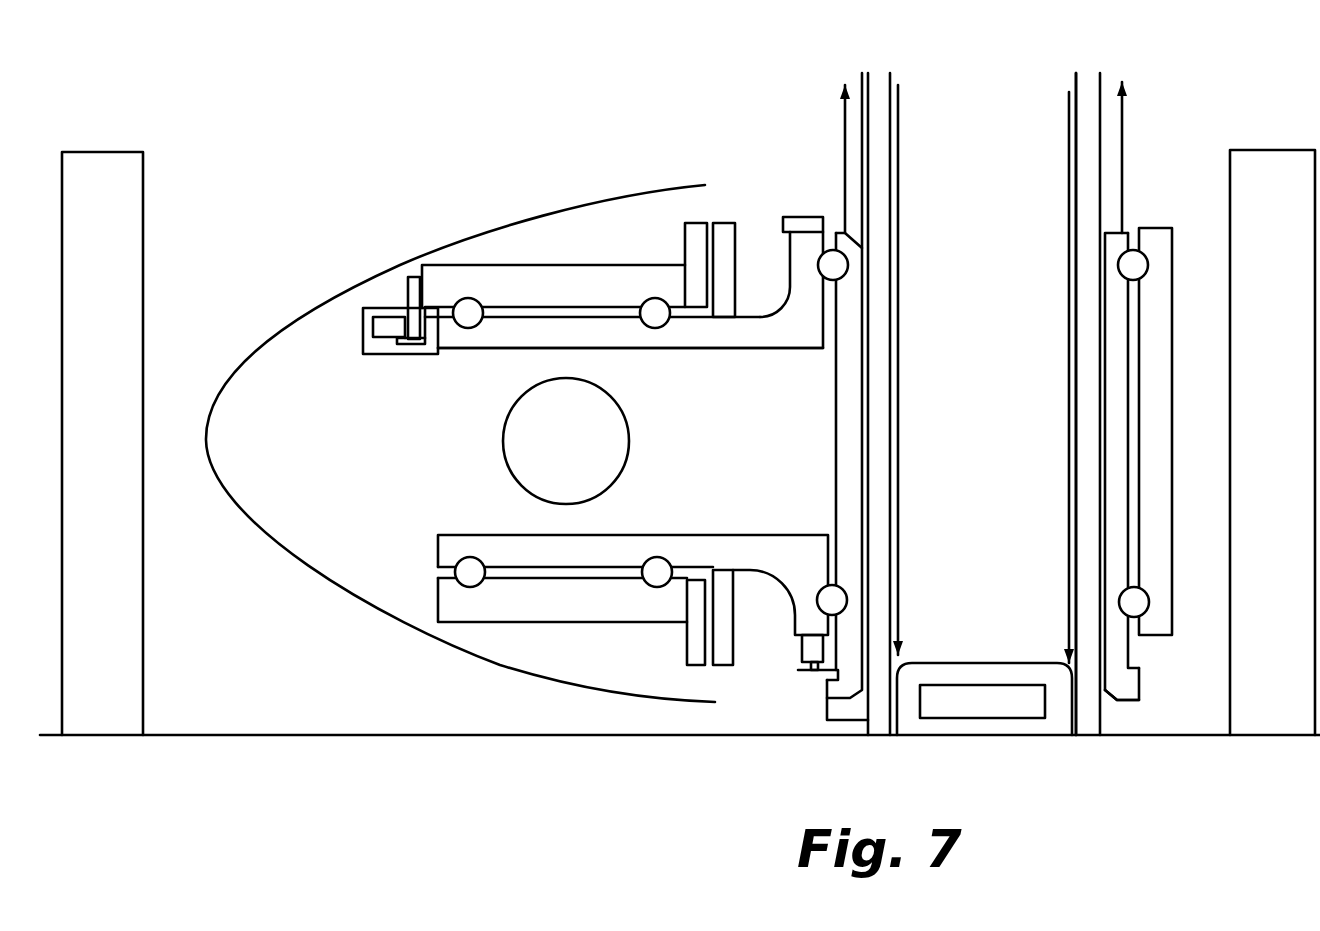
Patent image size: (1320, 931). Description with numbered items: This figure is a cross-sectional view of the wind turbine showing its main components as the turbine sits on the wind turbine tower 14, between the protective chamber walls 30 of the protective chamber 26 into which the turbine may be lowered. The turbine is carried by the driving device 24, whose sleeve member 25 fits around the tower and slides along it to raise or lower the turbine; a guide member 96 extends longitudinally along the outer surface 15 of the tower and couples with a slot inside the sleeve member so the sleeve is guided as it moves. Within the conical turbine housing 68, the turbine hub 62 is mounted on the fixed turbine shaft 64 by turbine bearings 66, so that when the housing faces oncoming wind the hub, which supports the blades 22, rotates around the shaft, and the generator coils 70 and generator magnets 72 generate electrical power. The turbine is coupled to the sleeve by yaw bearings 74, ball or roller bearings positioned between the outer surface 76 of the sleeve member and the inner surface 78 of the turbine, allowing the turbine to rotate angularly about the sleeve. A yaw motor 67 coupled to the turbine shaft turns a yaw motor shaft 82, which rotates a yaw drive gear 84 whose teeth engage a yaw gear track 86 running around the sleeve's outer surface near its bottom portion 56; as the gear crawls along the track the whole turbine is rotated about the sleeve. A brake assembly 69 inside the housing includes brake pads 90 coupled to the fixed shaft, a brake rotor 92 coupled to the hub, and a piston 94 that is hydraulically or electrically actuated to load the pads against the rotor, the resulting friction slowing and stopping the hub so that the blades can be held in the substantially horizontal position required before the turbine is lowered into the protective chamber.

The protective chamber 26 is at (123, 97).
The protective chamber walls 30 is at (122, 270).
The brake assembly 69 is at (545, 281).
The brake rotor 92 is at (403, 284).
The brake pads 90 is at (417, 318).
The piston 94 is at (390, 332).
The turbine shaft 64 is at (488, 350).
The generator magnets 72 is at (693, 222).
The generator coils 70 is at (723, 222).
The yaw bearings 74 is at (833, 265).
The guide member 96 is at (845, 110).
The blades 22 is at (602, 455).
The turbine bearings 66 is at (472, 556).
The turbine hub 62 is at (613, 634).
The yaw motor 67 is at (800, 645).
The yaw motor shaft 82 is at (795, 668).
The yaw drive gear 84 is at (798, 683).
The yaw gear track 86 is at (833, 677).
The driving device 24 is at (965, 668).
The outer surface 15 is at (1100, 132).
The wind turbine tower 14 is at (1083, 178).
The sleeve member 25 is at (1107, 247).
The inner surface 78 is at (1143, 460).
The outer surface 76 is at (1130, 515).
The bottom portion 56 is at (1135, 695).
The conical turbine housing 68 is at (240, 507).